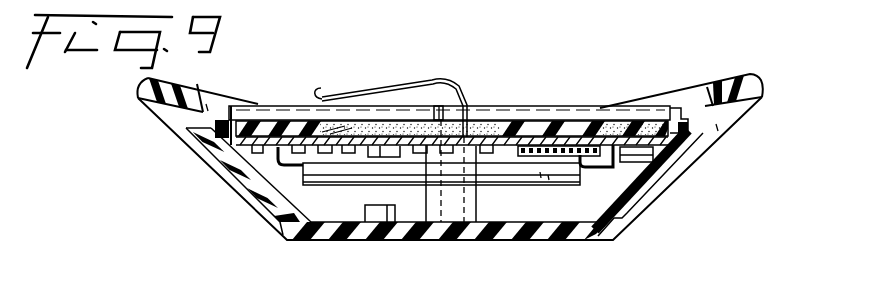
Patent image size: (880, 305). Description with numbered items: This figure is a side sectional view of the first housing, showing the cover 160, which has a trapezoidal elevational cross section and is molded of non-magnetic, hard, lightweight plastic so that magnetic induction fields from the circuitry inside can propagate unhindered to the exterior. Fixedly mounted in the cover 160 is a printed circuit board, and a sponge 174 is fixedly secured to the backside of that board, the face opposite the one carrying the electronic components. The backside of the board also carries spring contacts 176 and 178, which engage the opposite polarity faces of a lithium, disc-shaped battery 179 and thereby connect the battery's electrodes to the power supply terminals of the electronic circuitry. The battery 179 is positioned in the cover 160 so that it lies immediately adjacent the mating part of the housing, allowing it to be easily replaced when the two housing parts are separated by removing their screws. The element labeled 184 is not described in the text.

The cover 160 is at (724, 137).
The sponge 174 is at (581, 123).
The spring contact 176 is at (407, 85).
The spring contact 178 is at (340, 132).
The battery 179 is at (441, 105).
The support post 184 is at (467, 203).